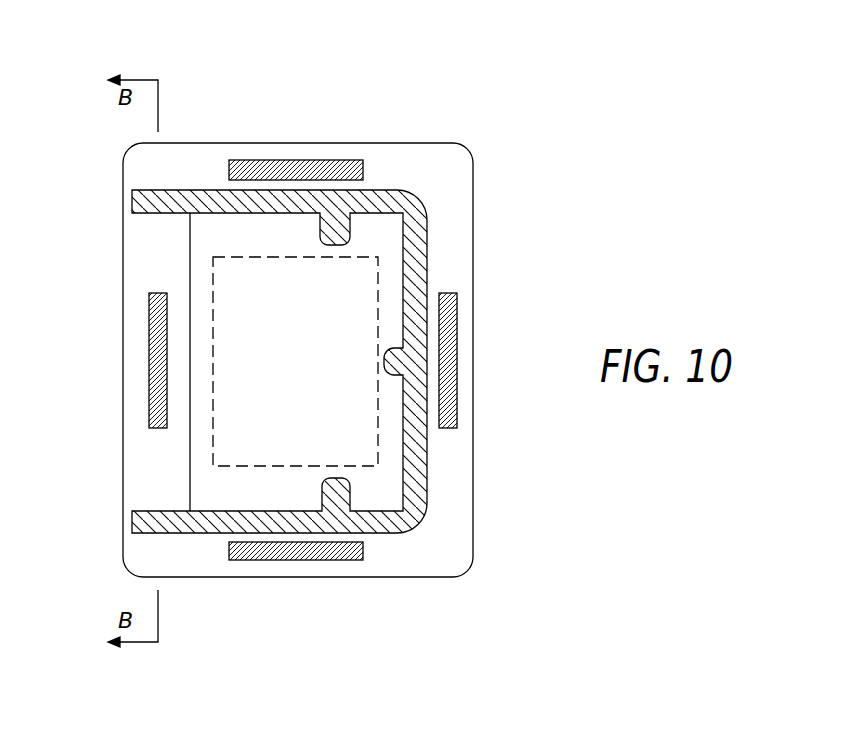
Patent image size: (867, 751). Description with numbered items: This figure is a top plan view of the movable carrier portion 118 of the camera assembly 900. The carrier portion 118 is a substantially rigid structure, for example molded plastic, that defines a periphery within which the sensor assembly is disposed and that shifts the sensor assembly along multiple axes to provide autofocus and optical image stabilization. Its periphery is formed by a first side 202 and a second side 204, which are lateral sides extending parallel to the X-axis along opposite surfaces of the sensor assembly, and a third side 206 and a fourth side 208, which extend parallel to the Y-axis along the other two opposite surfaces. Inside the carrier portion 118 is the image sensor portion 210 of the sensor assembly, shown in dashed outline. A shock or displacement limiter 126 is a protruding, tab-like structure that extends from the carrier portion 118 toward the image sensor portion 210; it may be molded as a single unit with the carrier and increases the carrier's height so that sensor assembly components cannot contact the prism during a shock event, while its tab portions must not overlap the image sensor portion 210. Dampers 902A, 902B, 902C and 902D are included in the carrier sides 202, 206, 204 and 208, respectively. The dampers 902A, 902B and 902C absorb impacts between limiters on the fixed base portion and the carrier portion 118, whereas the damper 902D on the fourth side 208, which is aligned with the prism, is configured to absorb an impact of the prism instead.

The camera assembly 900 is at (498, 137).
The movable carrier portion 118 is at (473, 512).
The shock or displacement limiter 126 is at (427, 444).
The first side 202 is at (272, 577).
The second side 204 is at (254, 143).
The third side 206 is at (473, 363).
The fourth side 208 is at (123, 370).
The image sensor portion 210 is at (311, 373).
The damper 902A is at (302, 560).
The damper 902B is at (457, 307).
The damper 902C is at (296, 160).
The damper 902D is at (149, 313).